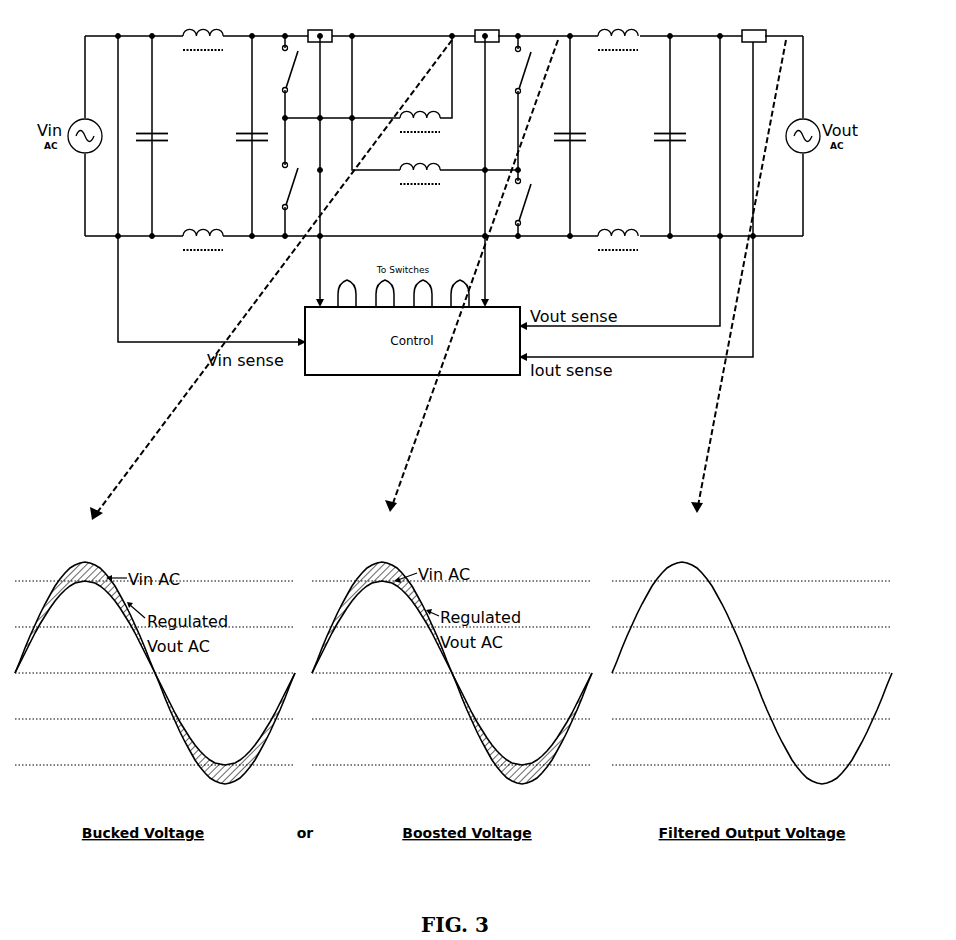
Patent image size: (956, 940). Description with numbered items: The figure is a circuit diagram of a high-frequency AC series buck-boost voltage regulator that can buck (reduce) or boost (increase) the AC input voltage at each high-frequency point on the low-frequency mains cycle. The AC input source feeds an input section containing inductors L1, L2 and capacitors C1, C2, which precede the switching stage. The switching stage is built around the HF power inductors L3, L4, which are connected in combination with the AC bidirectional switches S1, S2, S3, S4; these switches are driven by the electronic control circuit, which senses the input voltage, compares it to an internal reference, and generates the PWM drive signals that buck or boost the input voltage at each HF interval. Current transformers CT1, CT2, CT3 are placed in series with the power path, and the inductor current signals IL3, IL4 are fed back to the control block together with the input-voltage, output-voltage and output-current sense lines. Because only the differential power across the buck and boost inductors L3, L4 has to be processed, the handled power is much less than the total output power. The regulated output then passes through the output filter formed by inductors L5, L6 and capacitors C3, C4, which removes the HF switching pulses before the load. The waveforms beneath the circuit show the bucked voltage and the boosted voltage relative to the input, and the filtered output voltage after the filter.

The input inductor L1 is at (203, 29).
The input inductor L2 is at (203, 229).
The HF power inductor L3 is at (420, 112).
The HF power inductor L4 is at (420, 164).
The output filter inductor L5 is at (618, 29).
The output filter inductor L6 is at (618, 229).
The input capacitor C1 is at (163, 137).
The input capacitor C2 is at (239, 137).
The output capacitor C3 is at (581, 137).
The output capacitor C4 is at (657, 137).
The switch S1 is at (278, 69).
The switch S2 is at (278, 186).
The switch S3 is at (511, 70).
The switch S4 is at (532, 202).
The current transformer CT1 is at (482, 25).
The current transformer CT2 is at (316, 25).
The current transformer CT3 is at (750, 25).
The inductor L3 current sense IL3 is at (498, 171).
The inductor L4 current sense IL4 is at (305, 171).